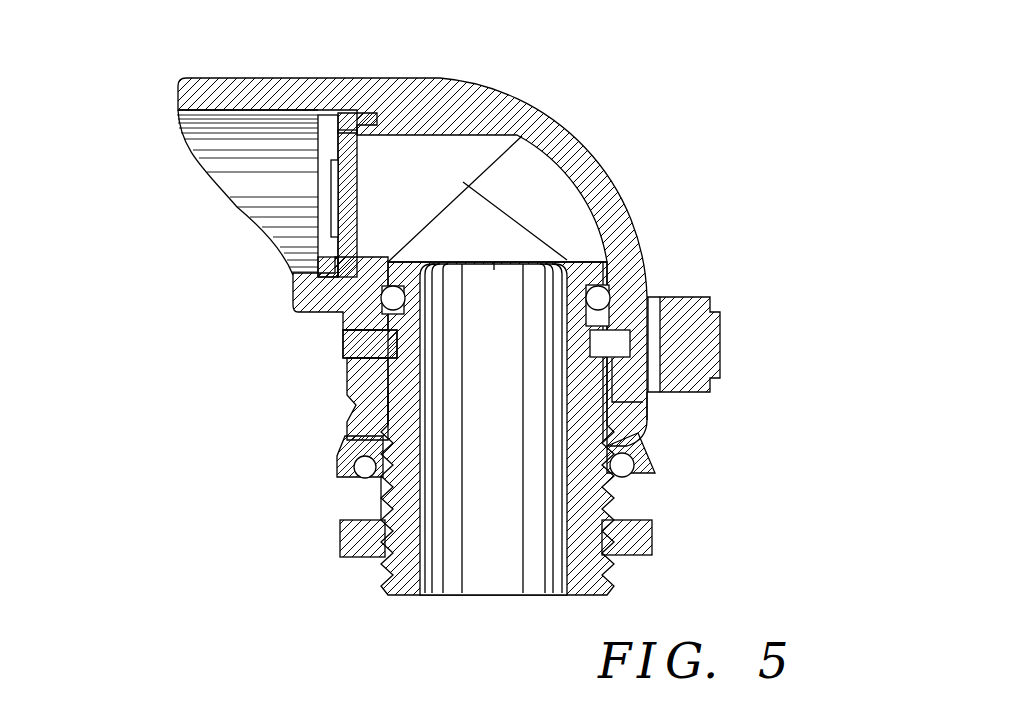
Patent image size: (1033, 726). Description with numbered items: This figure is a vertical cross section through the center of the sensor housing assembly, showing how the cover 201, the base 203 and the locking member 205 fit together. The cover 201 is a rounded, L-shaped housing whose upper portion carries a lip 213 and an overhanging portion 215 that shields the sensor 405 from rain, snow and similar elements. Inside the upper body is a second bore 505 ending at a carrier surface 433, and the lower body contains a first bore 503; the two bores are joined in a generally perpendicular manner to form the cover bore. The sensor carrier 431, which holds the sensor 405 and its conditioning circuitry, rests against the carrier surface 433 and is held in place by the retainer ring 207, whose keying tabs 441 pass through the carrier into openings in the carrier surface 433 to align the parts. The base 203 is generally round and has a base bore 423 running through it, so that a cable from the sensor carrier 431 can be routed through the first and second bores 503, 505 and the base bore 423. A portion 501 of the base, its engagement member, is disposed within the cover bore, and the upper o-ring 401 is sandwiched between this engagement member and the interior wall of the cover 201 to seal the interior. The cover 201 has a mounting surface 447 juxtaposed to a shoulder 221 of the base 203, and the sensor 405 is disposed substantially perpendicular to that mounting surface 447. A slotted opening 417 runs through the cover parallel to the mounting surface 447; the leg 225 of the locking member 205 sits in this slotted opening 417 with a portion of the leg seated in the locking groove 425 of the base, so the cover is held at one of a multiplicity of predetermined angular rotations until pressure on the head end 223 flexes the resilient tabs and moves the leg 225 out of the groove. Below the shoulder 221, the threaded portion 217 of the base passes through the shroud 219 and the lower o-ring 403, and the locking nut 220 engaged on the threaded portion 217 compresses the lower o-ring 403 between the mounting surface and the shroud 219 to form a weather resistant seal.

The cover 201 is at (584, 121).
The base 203 is at (352, 498).
The locking member 205 is at (734, 282).
The retainer ring 207 is at (326, 125).
The lip 213 is at (188, 80).
The overhanging portion 215 is at (178, 136).
The threaded portion 217 is at (402, 570).
The shroud 219 is at (353, 442).
The locking nut 220 is at (645, 547).
The shoulder 221 is at (356, 421).
The head end 223 is at (705, 353).
The leg 225 is at (345, 342).
The upper o-ring 401 is at (602, 300).
The lower o-ring 403 is at (622, 466).
The sensor 405 is at (334, 199).
The slotted opening 417 is at (334, 346).
The base bore 423 is at (488, 560).
The locking groove 425 is at (397, 385).
The sensor carrier 431 is at (344, 157).
The carrier surface 433 is at (330, 285).
The keying tabs 441 is at (366, 128).
The mounting surface 447 is at (662, 402).
The portion of the base 501 is at (434, 339).
The first bore 503 is at (503, 305).
The second bore 505 is at (424, 176).